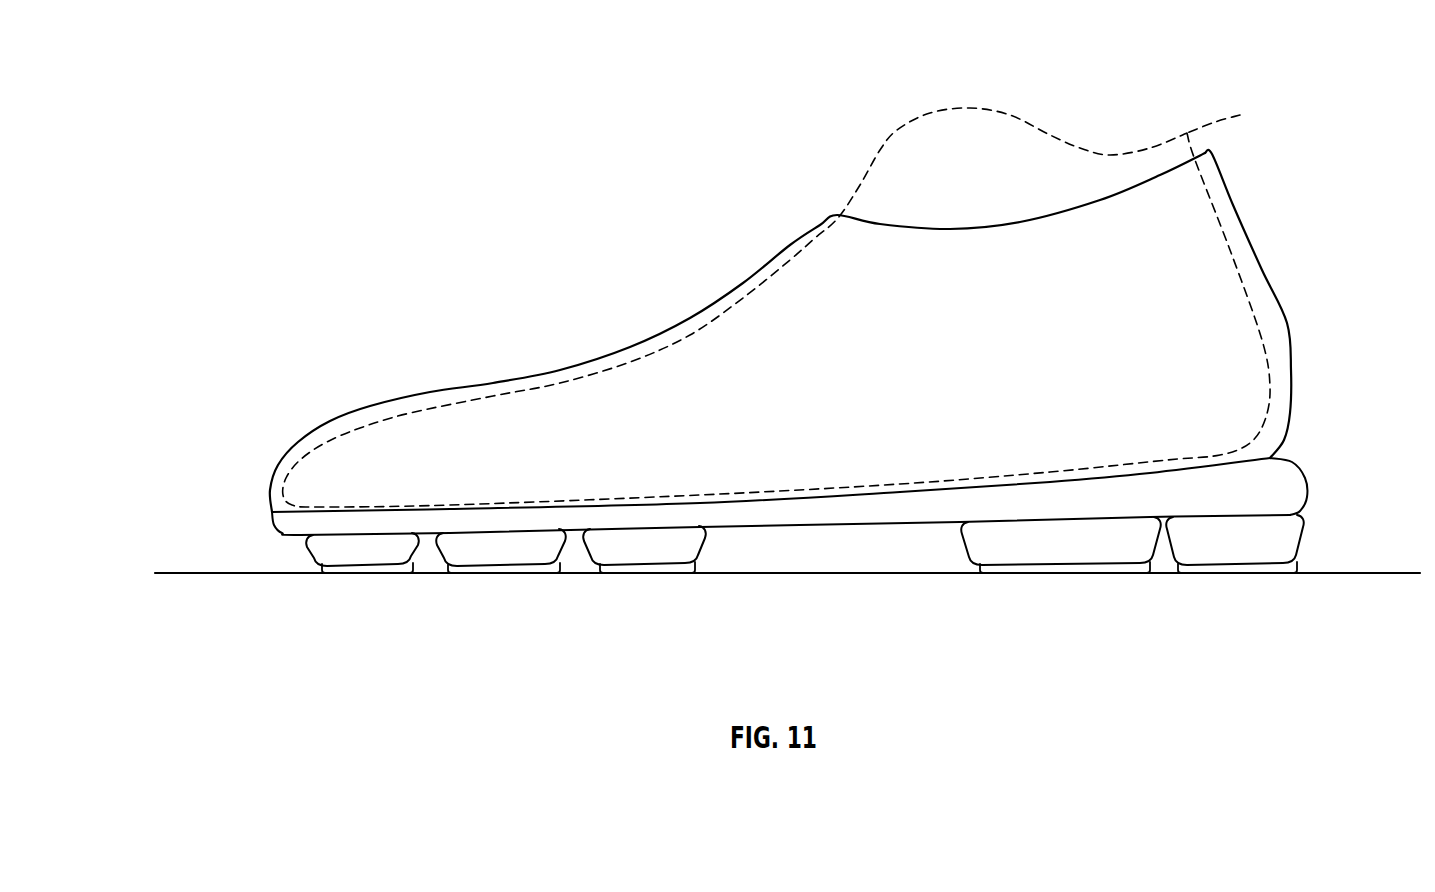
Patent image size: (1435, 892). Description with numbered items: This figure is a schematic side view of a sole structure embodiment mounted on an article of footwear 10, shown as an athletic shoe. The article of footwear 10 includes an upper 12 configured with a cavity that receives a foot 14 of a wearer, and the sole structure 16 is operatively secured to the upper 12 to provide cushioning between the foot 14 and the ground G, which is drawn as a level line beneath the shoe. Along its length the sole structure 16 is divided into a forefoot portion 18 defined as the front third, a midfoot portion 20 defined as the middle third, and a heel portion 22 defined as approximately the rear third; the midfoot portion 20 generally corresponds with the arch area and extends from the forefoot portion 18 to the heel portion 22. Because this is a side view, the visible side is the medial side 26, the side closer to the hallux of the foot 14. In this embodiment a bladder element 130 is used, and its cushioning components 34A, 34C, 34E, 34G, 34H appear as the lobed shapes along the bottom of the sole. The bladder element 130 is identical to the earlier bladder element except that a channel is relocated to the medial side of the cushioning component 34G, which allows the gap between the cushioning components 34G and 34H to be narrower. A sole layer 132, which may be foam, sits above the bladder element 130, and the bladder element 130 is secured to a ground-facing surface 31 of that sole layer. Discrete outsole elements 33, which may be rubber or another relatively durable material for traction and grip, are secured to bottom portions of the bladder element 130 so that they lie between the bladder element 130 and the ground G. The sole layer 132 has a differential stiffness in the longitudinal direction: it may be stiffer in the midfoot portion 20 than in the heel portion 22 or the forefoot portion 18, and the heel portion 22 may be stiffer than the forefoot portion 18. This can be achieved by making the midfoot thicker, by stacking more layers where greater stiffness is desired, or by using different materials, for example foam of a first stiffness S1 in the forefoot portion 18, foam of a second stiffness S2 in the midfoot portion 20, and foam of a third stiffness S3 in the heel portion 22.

The article of footwear 10 is at (716, 207).
The upper 12 is at (630, 350).
The foot 14 is at (1231, 124).
The sole structure 16 is at (264, 537).
The forefoot portion 18 is at (497, 520).
The midfoot portion 20 is at (763, 527).
The heel portion 22 is at (1103, 507).
The medial side 26 is at (870, 430).
The ground-facing surface 31 is at (848, 540).
The outsole elements 33 is at (393, 573).
The outsole segment 34A is at (348, 553).
The outsole segment 34C is at (463, 543).
The outsole segment 34E is at (643, 547).
The cushioning component 34G is at (1122, 553).
The cushioning component 34H is at (1255, 550).
The bladder element 130 is at (1285, 566).
The sole layer 132 is at (1262, 480).
The first stiffness S1 is at (415, 530).
The second stiffness S2 is at (740, 517).
The third stiffness S3 is at (1200, 488).
The ground G is at (183, 573).